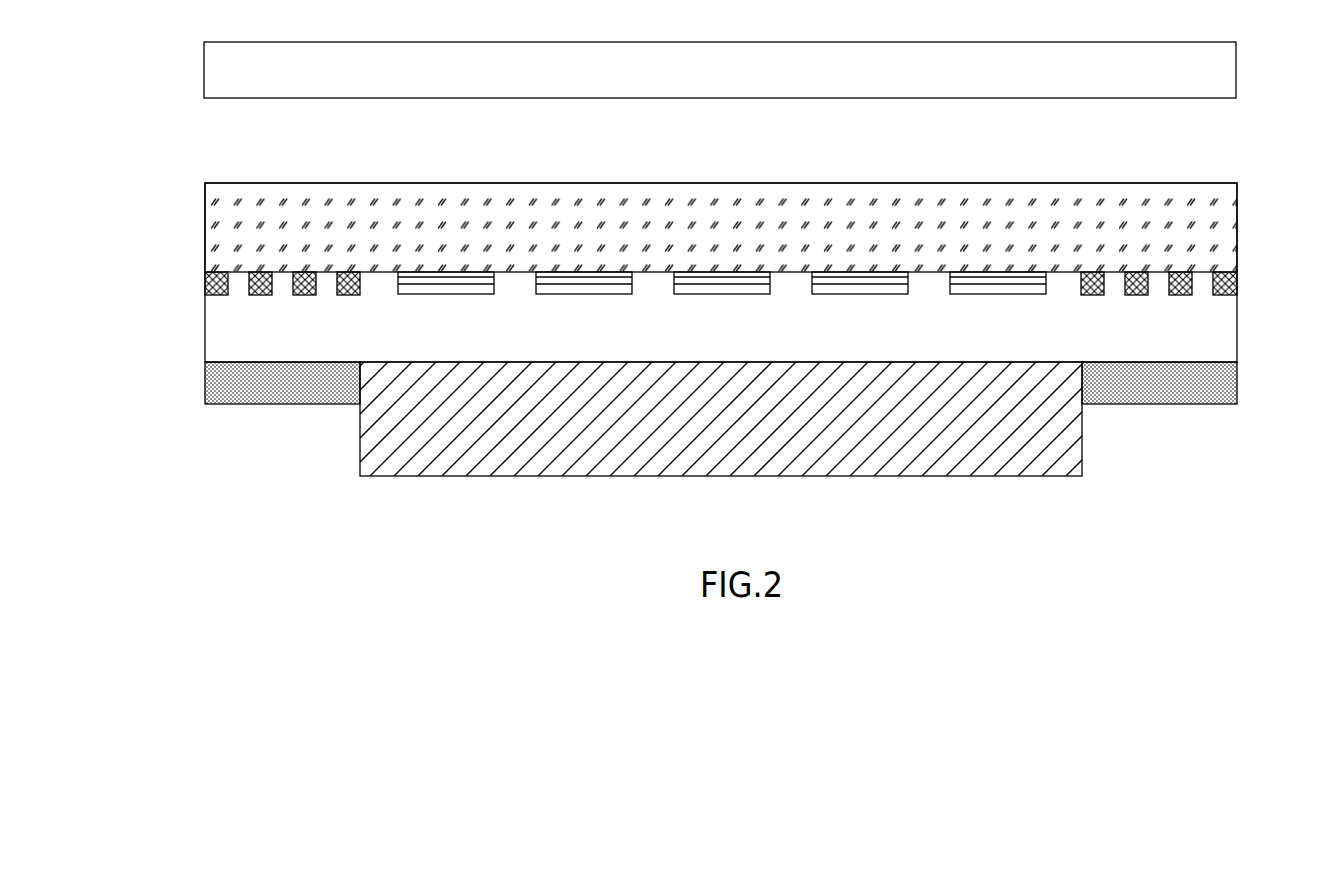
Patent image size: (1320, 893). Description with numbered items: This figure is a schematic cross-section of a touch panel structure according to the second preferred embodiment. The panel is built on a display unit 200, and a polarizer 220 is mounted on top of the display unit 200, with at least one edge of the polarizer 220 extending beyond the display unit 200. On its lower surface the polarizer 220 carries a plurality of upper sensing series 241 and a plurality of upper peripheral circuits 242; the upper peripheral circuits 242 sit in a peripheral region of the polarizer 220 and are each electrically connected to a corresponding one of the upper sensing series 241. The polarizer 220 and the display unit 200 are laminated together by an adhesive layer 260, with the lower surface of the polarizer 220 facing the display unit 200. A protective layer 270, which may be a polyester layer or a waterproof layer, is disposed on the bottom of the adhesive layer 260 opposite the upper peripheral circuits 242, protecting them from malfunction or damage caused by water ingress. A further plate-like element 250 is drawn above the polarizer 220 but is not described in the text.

The display unit 200 is at (727, 453).
The polarizer 220 is at (721, 202).
The upper sensing series 241 is at (579, 218).
The upper peripheral circuits 242 is at (674, 314).
The cover plate 250 is at (720, 97).
The adhesive layer 260 is at (721, 363).
The protective layer 270 is at (750, 437).